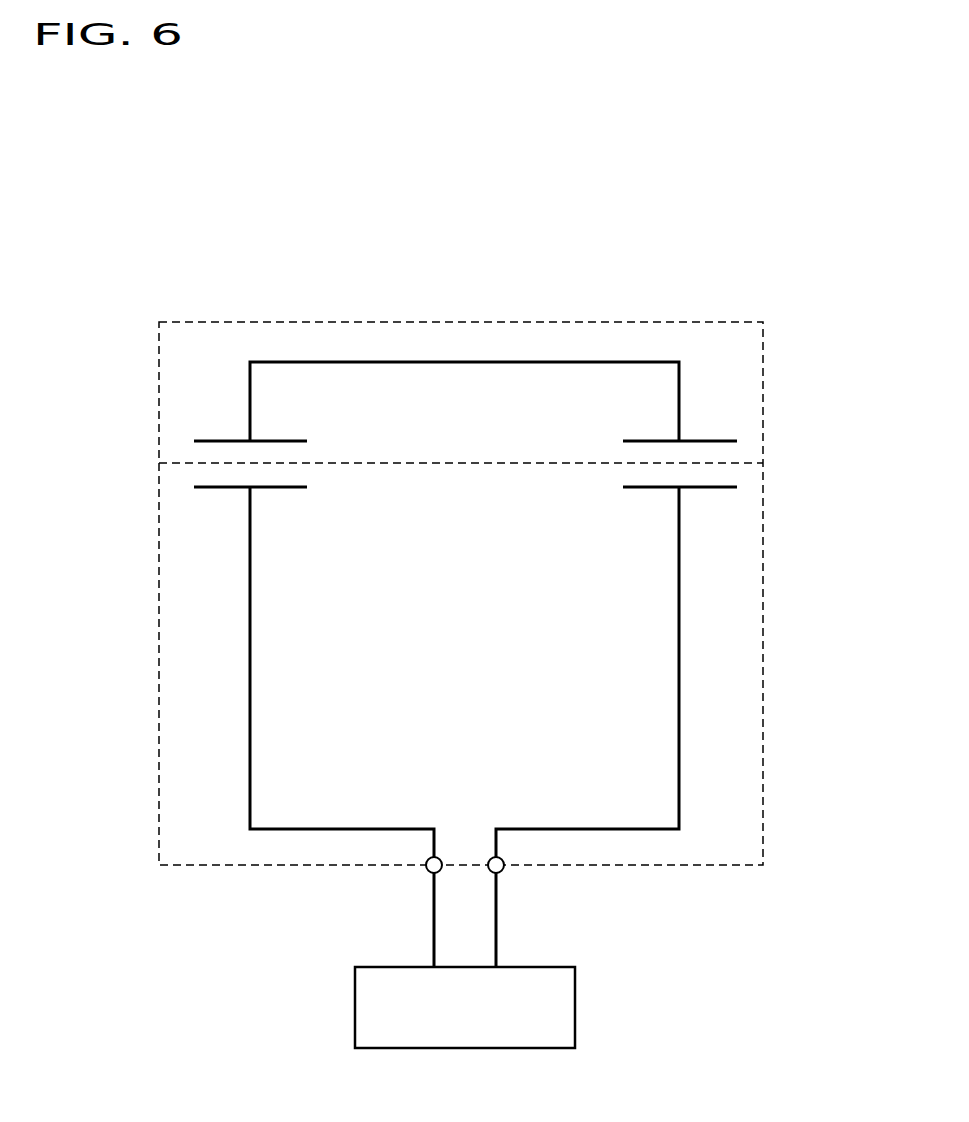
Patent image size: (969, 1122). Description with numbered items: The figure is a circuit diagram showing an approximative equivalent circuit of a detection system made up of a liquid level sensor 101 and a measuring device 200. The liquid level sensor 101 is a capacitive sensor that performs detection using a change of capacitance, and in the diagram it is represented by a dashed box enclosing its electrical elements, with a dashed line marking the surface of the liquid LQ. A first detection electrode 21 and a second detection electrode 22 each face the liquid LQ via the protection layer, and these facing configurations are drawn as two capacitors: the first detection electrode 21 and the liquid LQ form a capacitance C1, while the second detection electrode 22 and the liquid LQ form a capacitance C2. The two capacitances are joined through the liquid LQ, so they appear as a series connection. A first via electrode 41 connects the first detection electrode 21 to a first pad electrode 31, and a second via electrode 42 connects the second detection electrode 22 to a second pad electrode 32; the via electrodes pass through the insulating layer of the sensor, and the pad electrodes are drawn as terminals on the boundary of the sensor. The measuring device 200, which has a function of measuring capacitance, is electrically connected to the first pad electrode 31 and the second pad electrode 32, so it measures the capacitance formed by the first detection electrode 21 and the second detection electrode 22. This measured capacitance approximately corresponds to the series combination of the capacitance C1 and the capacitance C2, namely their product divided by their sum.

The liquid level sensor 101 is at (763, 662).
The liquid LQ is at (763, 395).
The first detection electrode 21 is at (222, 488).
The second detection electrode 22 is at (698, 488).
The capacitance C1 is at (271, 504).
The capacitance C2 is at (653, 505).
The first pad electrode 31 is at (427, 873).
The second pad electrode 32 is at (502, 872).
The first via electrode 41 is at (250, 773).
The second via electrode 42 is at (679, 773).
The measuring device 200 is at (543, 965).